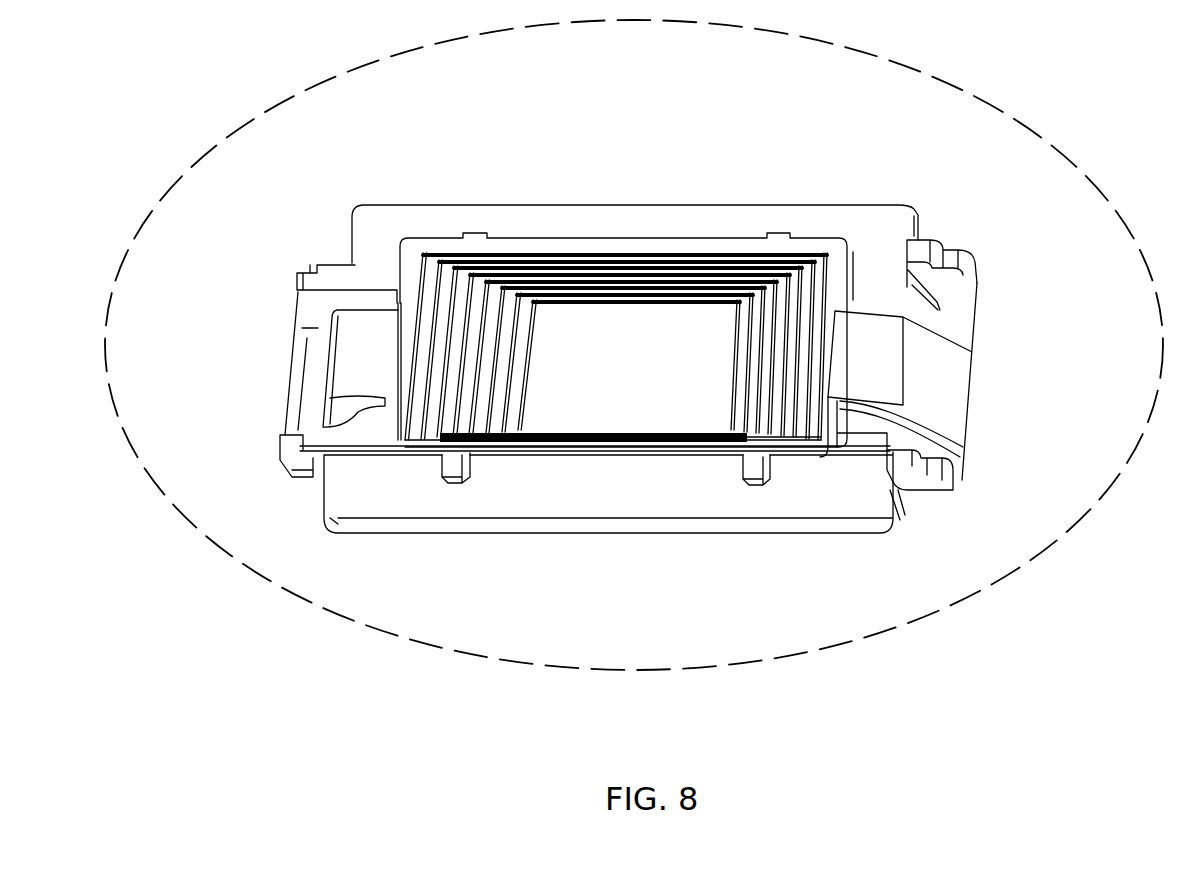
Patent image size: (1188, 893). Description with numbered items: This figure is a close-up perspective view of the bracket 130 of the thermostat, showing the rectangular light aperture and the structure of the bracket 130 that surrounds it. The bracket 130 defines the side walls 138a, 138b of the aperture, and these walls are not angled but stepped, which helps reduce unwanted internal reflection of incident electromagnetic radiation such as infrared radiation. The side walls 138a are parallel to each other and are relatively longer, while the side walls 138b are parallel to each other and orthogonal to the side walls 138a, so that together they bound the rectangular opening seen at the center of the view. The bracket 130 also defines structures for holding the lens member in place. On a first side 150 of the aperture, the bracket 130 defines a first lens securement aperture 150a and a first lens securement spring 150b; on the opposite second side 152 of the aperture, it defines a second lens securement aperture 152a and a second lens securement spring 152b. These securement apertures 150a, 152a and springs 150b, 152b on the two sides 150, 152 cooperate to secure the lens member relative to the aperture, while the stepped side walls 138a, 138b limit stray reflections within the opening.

The bracket 130 is at (401, 168).
The side walls 138a is at (602, 247).
The side walls 138b is at (433, 290).
The first side 150 is at (292, 371).
The first lens securement aperture 150a is at (312, 316).
The first lens securement spring 150b is at (330, 398).
The second side 152 is at (955, 380).
The second lens securement aperture 152a is at (967, 312).
The second lens securement spring 152b is at (933, 412).